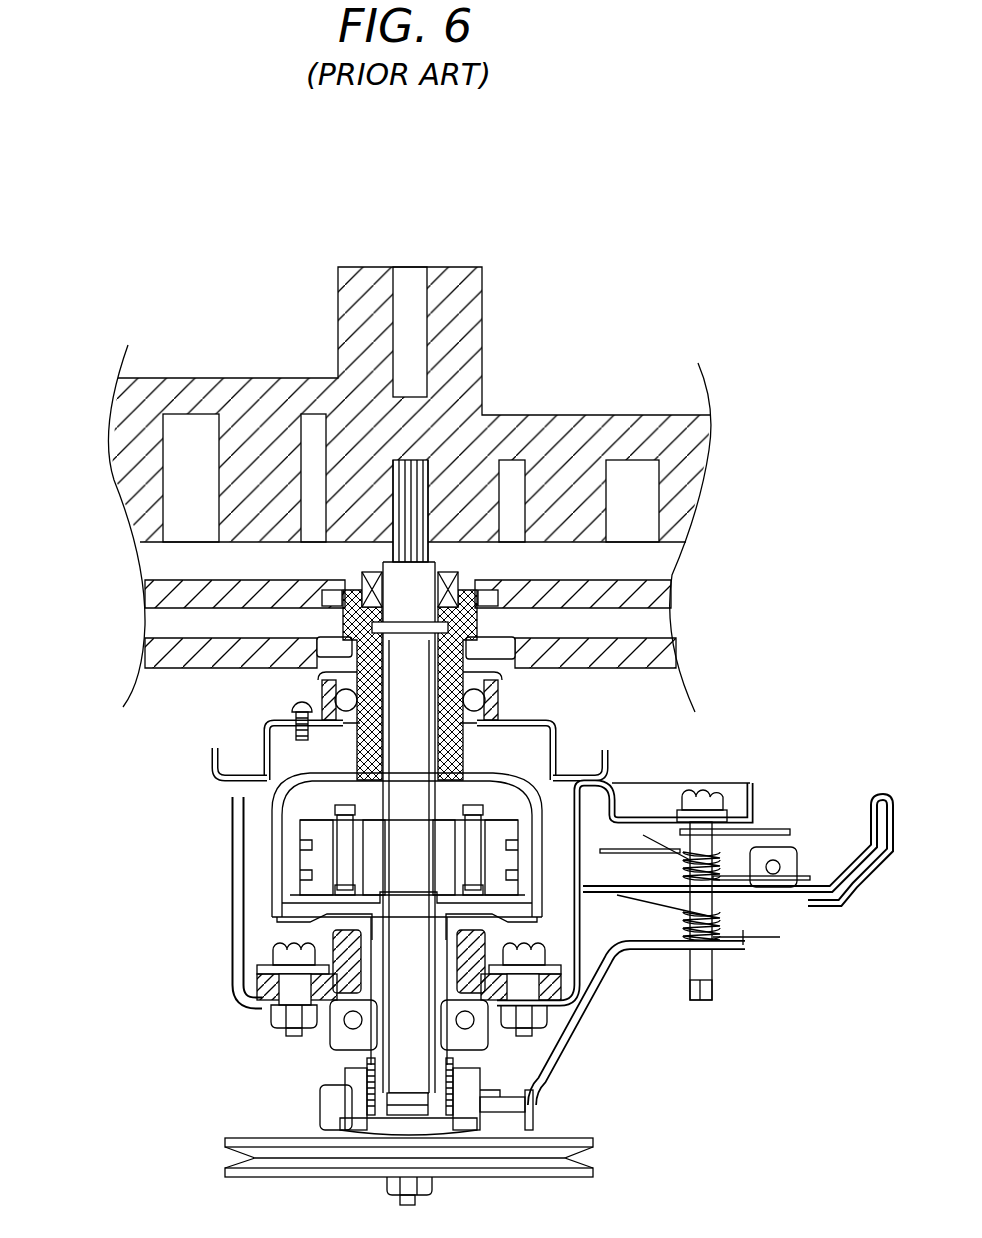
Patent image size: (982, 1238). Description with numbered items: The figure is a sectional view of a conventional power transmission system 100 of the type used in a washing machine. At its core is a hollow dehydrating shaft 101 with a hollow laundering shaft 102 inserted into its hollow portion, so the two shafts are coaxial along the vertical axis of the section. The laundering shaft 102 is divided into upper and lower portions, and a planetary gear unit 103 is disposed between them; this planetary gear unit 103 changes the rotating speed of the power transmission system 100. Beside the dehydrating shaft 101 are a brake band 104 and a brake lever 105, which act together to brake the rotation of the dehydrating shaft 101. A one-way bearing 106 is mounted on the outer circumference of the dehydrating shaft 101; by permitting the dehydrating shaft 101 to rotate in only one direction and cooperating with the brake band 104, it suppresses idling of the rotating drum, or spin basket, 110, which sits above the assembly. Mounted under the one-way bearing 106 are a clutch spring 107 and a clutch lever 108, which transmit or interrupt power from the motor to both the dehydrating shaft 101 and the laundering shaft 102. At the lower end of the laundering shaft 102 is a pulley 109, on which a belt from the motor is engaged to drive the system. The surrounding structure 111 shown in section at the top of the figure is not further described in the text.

The power transmission system 100 is at (102, 782).
The hollow dehydrating shaft 101 is at (462, 646).
The hollow laundering shaft 102 is at (417, 588).
The planetary gear unit 103 is at (490, 810).
The brake band 104 is at (560, 852).
The brake lever 105 is at (713, 983).
The one-way bearing 106 is at (363, 968).
The clutch spring 107 is at (460, 1085).
The clutch lever 108 is at (590, 1038).
The pulley 109 is at (595, 1178).
The rotating drum 110 is at (175, 595).
The engine block 111 is at (125, 452).